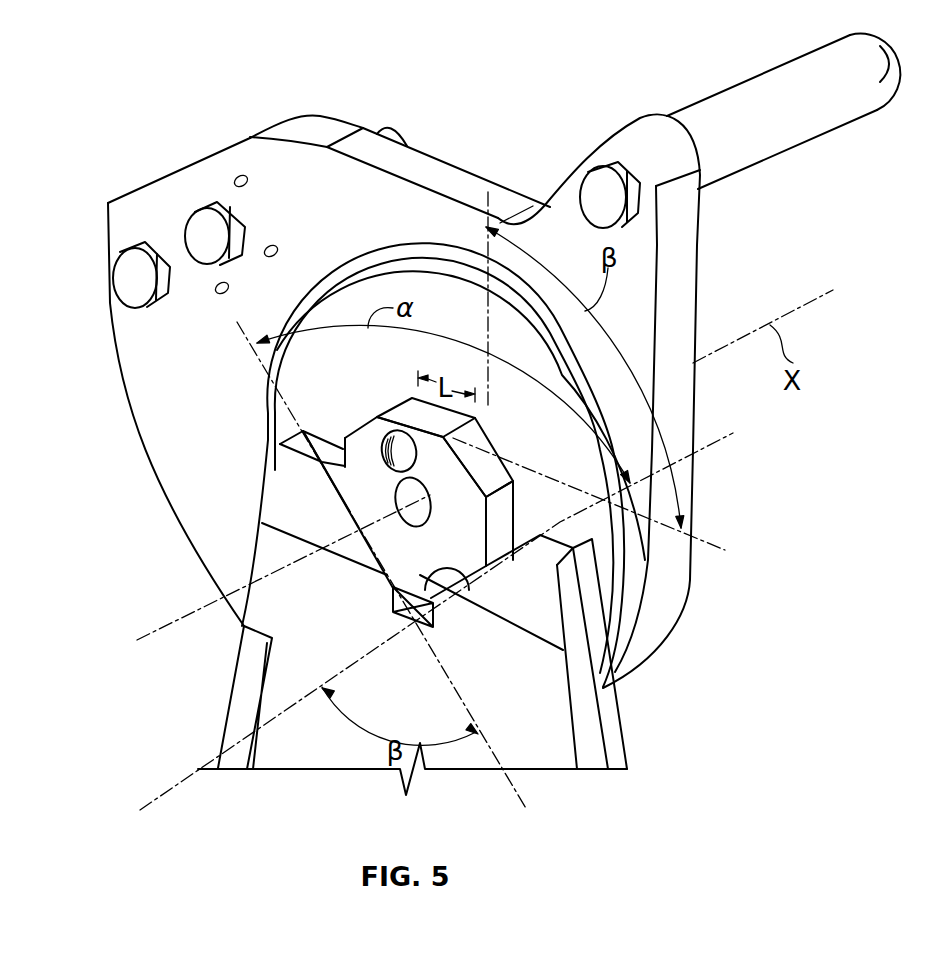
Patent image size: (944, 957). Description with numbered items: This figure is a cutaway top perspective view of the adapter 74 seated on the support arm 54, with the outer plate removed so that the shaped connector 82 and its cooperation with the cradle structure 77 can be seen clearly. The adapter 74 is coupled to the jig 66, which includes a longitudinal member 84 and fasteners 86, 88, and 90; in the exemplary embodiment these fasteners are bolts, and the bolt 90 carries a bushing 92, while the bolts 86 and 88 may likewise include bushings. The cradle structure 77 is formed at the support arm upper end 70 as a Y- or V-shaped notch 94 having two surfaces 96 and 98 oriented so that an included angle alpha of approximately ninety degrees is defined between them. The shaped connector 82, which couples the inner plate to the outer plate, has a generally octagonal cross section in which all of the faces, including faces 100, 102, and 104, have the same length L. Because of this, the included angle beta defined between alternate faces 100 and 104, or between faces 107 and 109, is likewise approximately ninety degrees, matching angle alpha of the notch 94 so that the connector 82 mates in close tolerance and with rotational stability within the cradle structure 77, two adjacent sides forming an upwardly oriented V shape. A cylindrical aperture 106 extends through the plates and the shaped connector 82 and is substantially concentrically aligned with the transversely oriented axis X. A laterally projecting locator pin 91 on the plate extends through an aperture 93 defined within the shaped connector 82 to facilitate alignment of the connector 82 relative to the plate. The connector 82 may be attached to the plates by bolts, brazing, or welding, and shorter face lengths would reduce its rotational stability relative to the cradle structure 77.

The support arm 54 is at (285, 685).
The jig 66 is at (107, 122).
The support arm upper end 70 is at (524, 724).
The adapter 74 is at (258, 382).
The cradle structure 77 is at (283, 485).
The shaped connector 82 is at (351, 526).
The longitudinal member 84 is at (581, 254).
The fastener 86 is at (125, 282).
The fastener 88 is at (200, 233).
The bolt 90 is at (602, 202).
The locator pin 91 is at (338, 517).
The bushing 92 is at (727, 92).
The aperture 93 is at (388, 443).
The notch 94 is at (396, 468).
The surface 96 is at (340, 450).
The surface 98 is at (411, 622).
The face 100 is at (500, 535).
The face 102 is at (487, 447).
The face 104 is at (412, 398).
The cylindrical aperture 106 is at (358, 540).
The face 107 is at (368, 545).
The face 109 is at (472, 600).